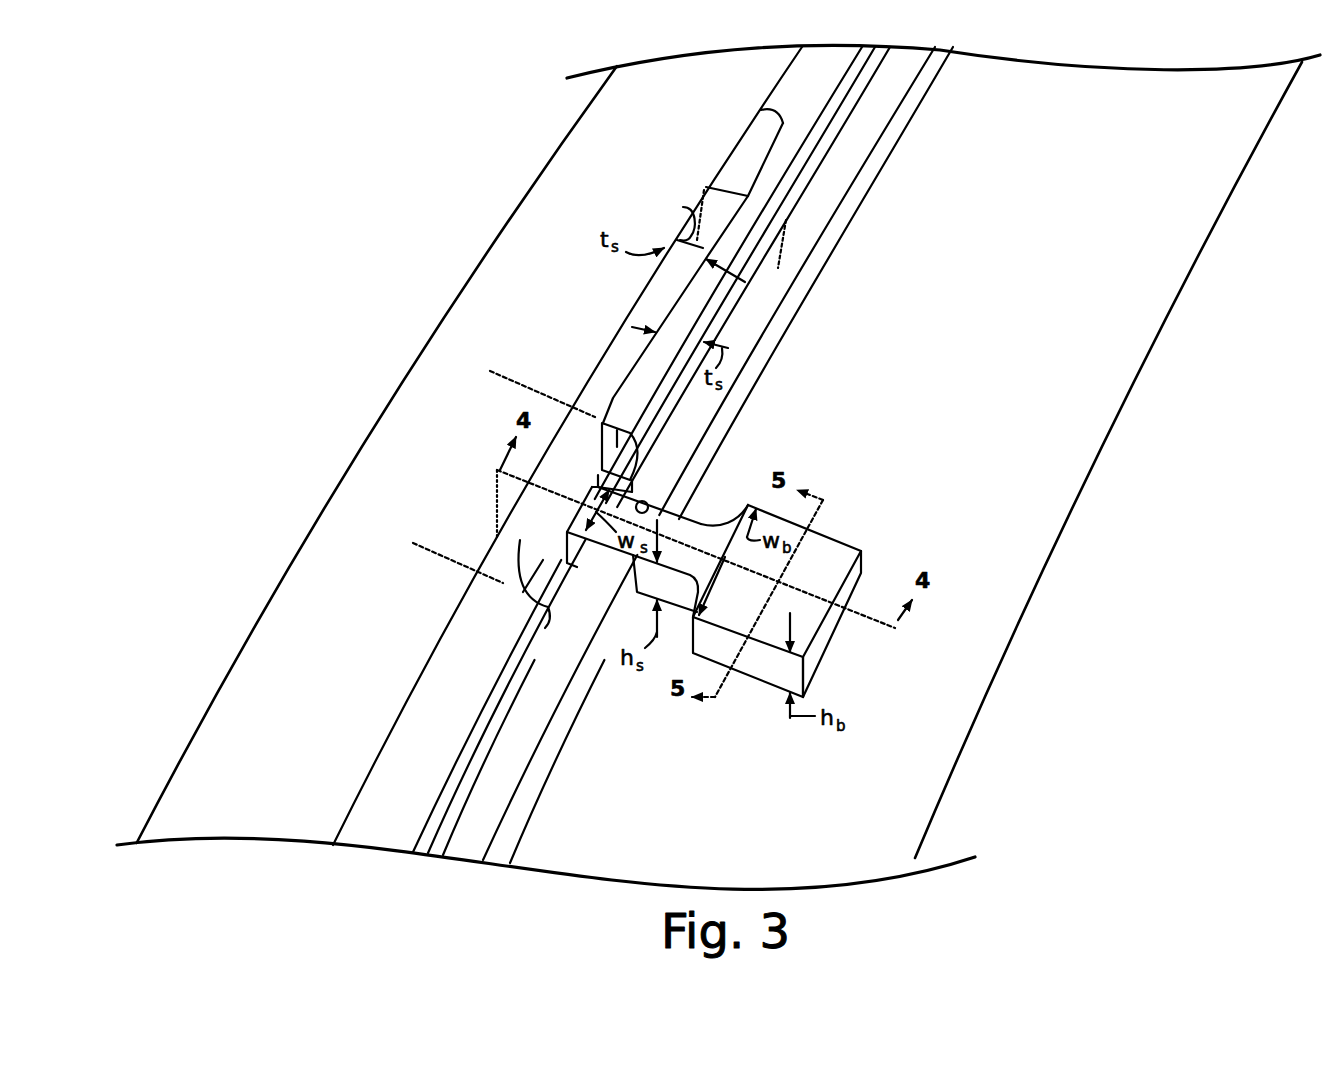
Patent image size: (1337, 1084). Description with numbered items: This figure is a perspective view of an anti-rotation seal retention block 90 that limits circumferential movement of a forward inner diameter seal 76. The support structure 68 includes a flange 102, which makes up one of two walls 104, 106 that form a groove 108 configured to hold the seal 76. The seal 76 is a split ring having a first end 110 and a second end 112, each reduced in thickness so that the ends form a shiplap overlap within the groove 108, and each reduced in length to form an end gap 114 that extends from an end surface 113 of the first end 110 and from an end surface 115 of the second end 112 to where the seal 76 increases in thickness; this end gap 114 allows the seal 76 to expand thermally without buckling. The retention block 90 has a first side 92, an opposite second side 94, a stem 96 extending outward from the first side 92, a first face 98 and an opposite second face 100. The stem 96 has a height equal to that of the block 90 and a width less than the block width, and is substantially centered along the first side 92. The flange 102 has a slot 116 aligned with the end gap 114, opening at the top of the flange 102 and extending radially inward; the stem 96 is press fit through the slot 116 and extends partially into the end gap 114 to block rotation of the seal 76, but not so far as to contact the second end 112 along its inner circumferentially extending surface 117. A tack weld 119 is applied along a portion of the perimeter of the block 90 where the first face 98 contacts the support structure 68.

The support structure 68 is at (1032, 317).
The forward inner diameter seal 76 is at (829, 79).
The seal retention block 90 is at (819, 587).
The first side 92 is at (683, 628).
The second side 94 is at (817, 660).
The stem 96 is at (685, 535).
The first face 98 is at (868, 595).
The second face 100 is at (823, 550).
The flange 102 is at (834, 182).
The wall 104 is at (838, 126).
The wall 106 is at (750, 137).
The groove 108 is at (786, 218).
The first end 110 is at (745, 282).
The second end 112 is at (658, 297).
The end surface 113 is at (612, 424).
The end gap 114 is at (505, 540).
The end surface 115 is at (683, 207).
The slot 116 is at (648, 495).
The inner circumferentially extending surface 117 is at (552, 508).
The tack weld 119 is at (836, 653).